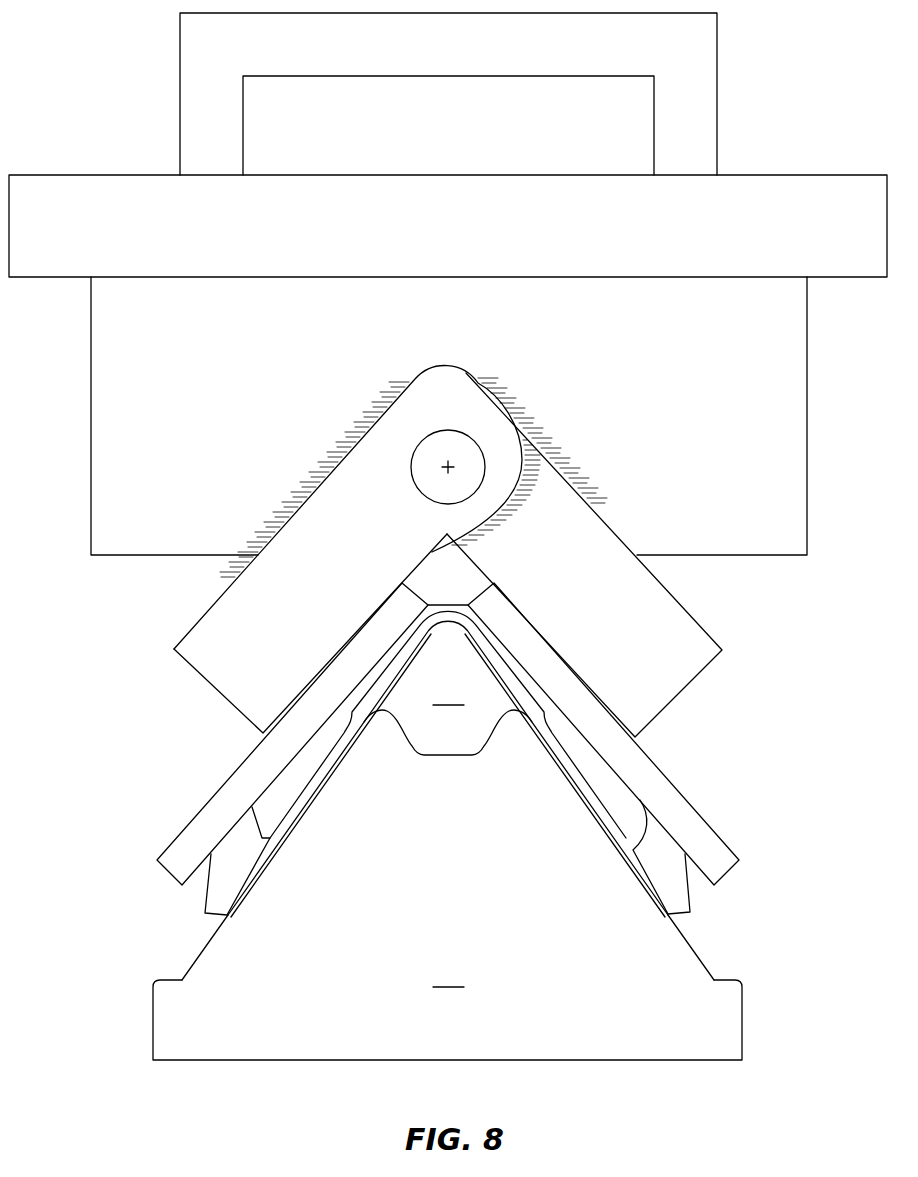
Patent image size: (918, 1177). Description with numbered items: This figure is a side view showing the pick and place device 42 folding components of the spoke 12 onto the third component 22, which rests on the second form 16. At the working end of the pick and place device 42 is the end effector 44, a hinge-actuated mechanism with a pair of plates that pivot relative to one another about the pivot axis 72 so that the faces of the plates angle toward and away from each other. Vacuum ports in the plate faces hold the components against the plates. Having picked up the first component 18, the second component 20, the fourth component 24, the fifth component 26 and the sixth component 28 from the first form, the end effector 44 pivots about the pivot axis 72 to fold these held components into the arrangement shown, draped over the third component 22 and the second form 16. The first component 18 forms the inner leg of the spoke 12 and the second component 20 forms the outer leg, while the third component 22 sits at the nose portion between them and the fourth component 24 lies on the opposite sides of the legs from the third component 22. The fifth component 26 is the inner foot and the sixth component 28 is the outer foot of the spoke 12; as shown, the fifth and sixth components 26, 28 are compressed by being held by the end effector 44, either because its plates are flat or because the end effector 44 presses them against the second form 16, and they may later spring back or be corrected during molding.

The pick and place device 42 is at (703, 83).
The pivot axis 72 is at (447, 470).
The fourth component 24 is at (397, 648).
The end effector 44 is at (702, 832).
The third component 22 is at (448, 760).
The spoke 12 is at (310, 800).
The second component 20 is at (278, 857).
The first component 18 is at (608, 830).
The sixth component 28 is at (210, 890).
The fifth component 26 is at (678, 888).
The second form 16 is at (447, 1009).